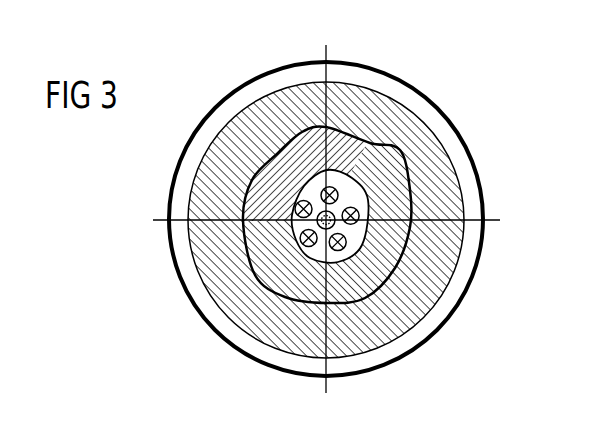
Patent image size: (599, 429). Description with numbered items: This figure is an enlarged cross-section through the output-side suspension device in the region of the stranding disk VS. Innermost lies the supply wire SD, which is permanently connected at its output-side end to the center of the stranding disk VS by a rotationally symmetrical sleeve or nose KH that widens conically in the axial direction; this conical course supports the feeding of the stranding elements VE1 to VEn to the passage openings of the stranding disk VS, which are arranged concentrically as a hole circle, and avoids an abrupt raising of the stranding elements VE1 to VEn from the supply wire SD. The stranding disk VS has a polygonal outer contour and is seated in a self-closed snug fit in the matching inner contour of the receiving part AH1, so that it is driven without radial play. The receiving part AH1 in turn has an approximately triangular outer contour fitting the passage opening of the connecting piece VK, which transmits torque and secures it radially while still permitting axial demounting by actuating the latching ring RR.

The stranding element VE1 is at (338, 186).
The stranding element VEn is at (296, 212).
The sleeve KH is at (368, 186).
The latching ring RR is at (480, 186).
The receiving part AH1 is at (397, 242).
The connecting piece VK is at (432, 300).
The supply wire SD is at (245, 226).
The stranding disk VS is at (308, 258).